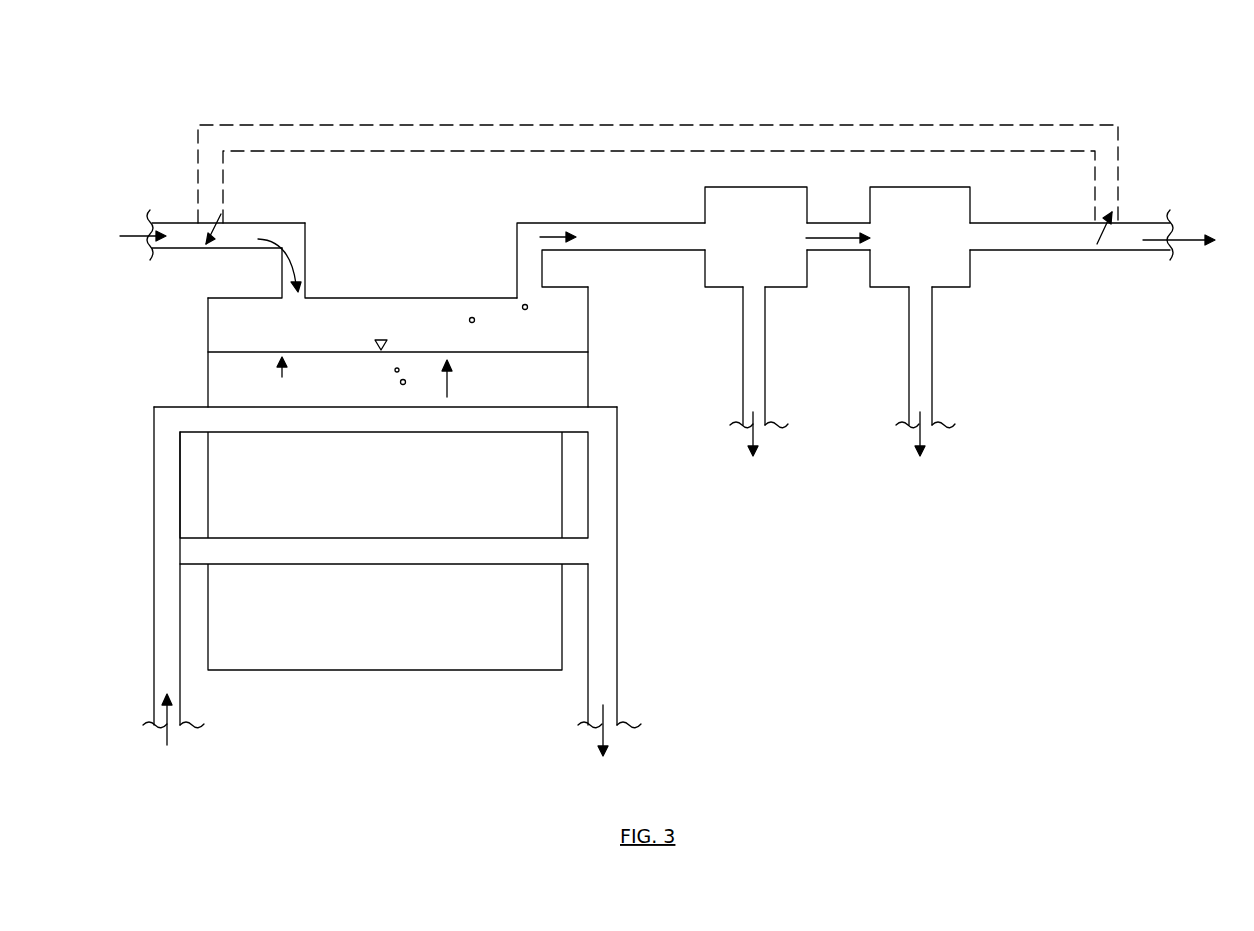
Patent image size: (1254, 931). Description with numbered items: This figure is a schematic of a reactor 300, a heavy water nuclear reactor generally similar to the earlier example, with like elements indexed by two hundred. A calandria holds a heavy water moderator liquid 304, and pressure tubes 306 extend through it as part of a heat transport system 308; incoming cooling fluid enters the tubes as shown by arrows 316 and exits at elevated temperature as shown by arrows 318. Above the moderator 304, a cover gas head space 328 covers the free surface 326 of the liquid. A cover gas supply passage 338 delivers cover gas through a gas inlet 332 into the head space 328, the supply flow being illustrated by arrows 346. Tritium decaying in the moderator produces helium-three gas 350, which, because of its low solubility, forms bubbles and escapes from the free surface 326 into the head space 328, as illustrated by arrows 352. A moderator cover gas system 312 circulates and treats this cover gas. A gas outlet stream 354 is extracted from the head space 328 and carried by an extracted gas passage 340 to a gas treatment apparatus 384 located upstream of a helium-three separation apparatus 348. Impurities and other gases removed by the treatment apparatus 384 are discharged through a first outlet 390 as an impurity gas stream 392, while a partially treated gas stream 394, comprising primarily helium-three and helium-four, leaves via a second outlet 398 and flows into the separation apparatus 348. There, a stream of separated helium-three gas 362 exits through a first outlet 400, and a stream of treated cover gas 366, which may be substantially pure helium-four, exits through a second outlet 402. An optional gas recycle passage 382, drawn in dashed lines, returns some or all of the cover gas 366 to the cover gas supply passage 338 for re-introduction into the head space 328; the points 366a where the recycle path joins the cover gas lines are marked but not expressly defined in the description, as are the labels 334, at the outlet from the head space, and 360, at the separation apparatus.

The reactor 300 is at (193, 70).
The gas recycle passage 382 is at (735, 125).
The cover gas supply passage 338 is at (198, 256).
The valve 366a is at (222, 215).
The arrows 346 is at (310, 244).
The gas inlet 332 is at (306, 296).
The cover gas head space 328 is at (237, 323).
The free surface 326 is at (276, 377).
The helium-three gas 350 is at (397, 372).
The arrows 352 is at (449, 382).
The heavy water moderator liquid 304 is at (592, 395).
The gas outlet stream 354 is at (527, 262).
The outlet pipe lower wall 334 is at (545, 278).
The extracted gas passage 340 is at (667, 252).
The gas treatment apparatus 384 is at (714, 292).
The first outlet 390 is at (768, 292).
The impurity gas stream 392 is at (748, 437).
The second outlet 398 is at (811, 225).
The partially treated gas stream 394 is at (832, 247).
The first outlet 400 is at (905, 290).
The second drain pipe 360 is at (935, 318).
The stream of separated helium-three gas 362 is at (915, 437).
The second outlet 402 is at (975, 252).
The stream of treated cover gas 366 is at (1183, 258).
The helium-three separation apparatus 348 is at (1034, 343).
The moderator cover gas system 312 is at (838, 500).
The pressure tubes 306 is at (298, 436).
The heat transport system 308 is at (550, 690).
The arrows 316 is at (165, 733).
The arrows 318 is at (600, 735).